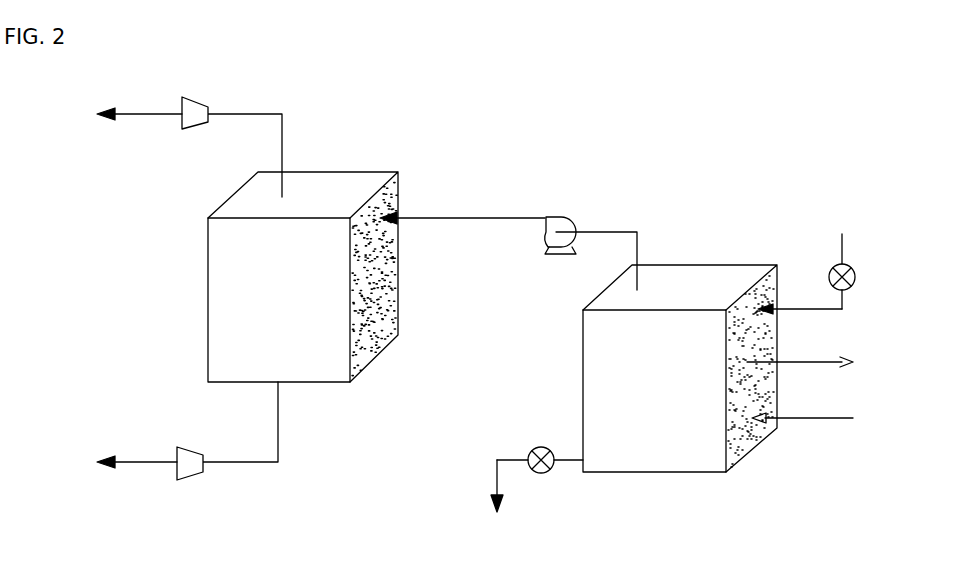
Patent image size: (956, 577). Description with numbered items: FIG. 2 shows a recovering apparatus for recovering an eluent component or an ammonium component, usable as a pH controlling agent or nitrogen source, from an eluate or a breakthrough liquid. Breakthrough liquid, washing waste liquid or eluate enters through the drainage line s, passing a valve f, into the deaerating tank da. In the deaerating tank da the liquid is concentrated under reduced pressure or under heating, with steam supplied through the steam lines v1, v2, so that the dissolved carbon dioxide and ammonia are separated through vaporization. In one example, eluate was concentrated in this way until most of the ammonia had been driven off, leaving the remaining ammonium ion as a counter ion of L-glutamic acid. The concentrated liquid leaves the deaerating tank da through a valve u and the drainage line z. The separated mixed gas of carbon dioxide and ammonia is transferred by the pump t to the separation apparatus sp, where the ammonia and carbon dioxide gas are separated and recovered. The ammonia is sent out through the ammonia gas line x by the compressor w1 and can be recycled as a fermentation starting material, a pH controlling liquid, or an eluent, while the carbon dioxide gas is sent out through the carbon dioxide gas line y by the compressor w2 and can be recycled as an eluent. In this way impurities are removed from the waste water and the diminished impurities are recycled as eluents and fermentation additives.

The separation apparatus sp is at (303, 277).
The deaerating tank da is at (680, 368).
The pump t is at (508, 251).
The valve f is at (853, 271).
The valve u is at (540, 443).
The compressor w1 is at (229, 147).
The compressor w2 is at (225, 451).
The ammonia gas line x is at (121, 119).
The carbon dioxide gas line y is at (116, 470).
The breakthrough liquid, washing waste liquid, eluate drainage line z is at (494, 503).
The breakthrough liquid, washing waste liquid, eluate drainage line s is at (800, 324).
The steam line v1 is at (818, 366).
The steam line v2 is at (821, 424).